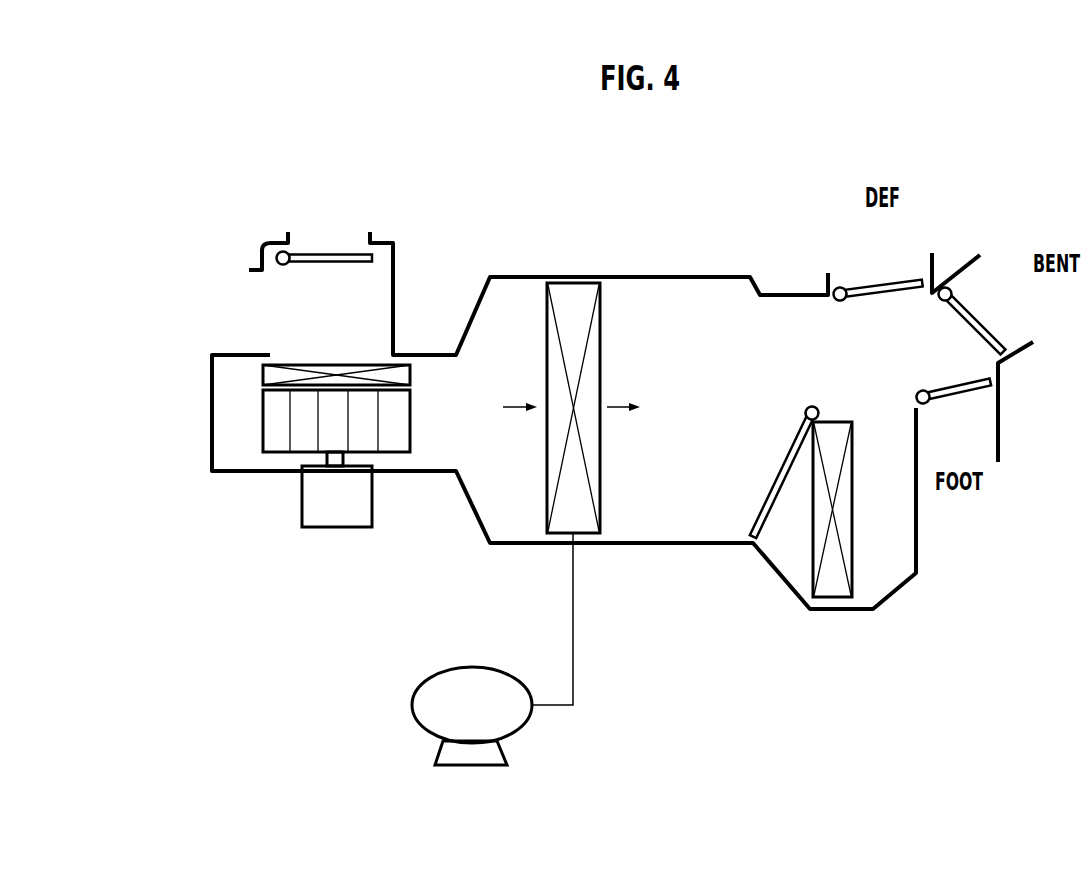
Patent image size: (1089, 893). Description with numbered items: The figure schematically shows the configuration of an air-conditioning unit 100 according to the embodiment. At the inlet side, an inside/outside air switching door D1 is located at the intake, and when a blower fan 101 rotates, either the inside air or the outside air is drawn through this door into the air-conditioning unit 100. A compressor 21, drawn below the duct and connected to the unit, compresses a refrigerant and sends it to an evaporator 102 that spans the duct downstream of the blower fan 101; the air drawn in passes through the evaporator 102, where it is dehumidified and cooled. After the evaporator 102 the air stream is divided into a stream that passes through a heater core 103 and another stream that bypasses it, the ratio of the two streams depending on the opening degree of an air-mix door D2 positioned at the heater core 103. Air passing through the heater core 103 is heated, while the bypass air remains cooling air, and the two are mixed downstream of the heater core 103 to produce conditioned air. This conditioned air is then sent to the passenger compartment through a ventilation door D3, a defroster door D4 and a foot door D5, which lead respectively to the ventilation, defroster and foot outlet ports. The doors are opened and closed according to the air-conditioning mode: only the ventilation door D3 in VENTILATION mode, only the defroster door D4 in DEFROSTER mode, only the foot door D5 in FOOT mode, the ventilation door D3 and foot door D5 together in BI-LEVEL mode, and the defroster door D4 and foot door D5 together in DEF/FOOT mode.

The air-conditioning unit 100 is at (178, 470).
The blower fan 101 is at (411, 437).
The evaporator 102 is at (546, 355).
The heater core 103 is at (833, 600).
The compressor 21 is at (411, 707).
The inside/outside air switching door D1 is at (330, 252).
The air-mix door D2 is at (781, 476).
The ventilation door D3 is at (987, 322).
The defroster door D4 is at (880, 281).
The foot door D5 is at (962, 398).